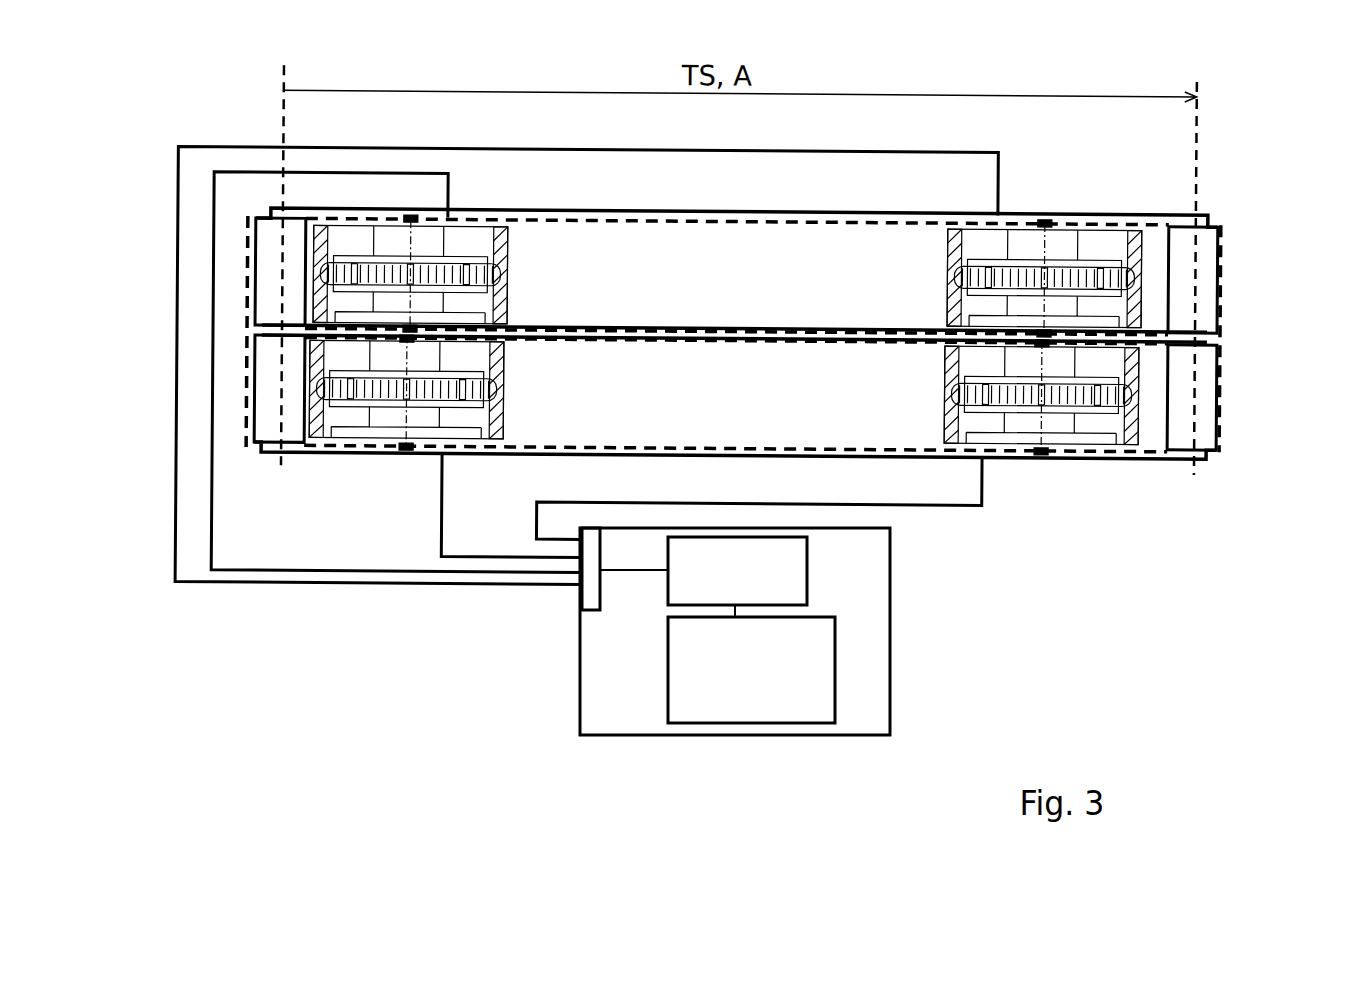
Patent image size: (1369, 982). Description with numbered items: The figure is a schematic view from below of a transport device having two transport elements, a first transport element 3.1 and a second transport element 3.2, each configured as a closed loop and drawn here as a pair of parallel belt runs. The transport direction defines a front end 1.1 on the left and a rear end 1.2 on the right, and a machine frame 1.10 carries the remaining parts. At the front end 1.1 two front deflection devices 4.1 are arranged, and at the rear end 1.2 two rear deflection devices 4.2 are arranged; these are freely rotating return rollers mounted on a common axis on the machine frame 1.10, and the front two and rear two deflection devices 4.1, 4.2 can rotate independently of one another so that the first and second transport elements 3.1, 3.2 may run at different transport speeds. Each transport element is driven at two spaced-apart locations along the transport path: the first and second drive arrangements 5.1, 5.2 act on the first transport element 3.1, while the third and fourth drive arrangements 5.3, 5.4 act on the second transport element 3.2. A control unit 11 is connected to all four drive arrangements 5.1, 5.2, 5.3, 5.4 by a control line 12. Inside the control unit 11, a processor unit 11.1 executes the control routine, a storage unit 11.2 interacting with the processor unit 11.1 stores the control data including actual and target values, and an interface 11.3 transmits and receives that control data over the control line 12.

The front end 1.1 is at (217, 324).
The rear end 1.2 is at (1250, 464).
The machine frame 1.10 is at (1143, 462).
The first transport element 3.1 is at (716, 409).
The second transport element 3.2 is at (716, 292).
The front deflection device 4.1 is at (270, 417).
The rear deflection device 4.2 is at (1198, 378).
The first drive arrangement 5.1 is at (373, 464).
The second drive arrangement 5.2 is at (1081, 476).
The third drive arrangement 5.3 is at (448, 222).
The fourth drive arrangement 5.4 is at (1093, 203).
The control unit 11 is at (916, 670).
The processor unit 11.1 is at (677, 585).
The storage unit 11.2 is at (682, 703).
The interface 11.3 is at (590, 587).
The control line 12 is at (940, 506).